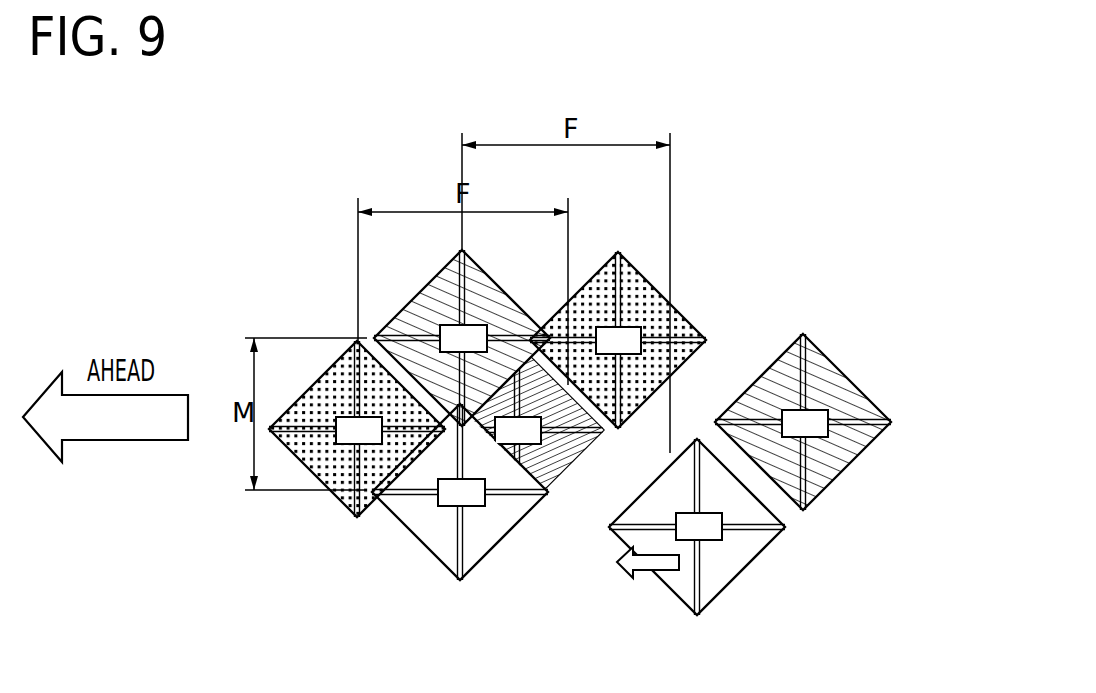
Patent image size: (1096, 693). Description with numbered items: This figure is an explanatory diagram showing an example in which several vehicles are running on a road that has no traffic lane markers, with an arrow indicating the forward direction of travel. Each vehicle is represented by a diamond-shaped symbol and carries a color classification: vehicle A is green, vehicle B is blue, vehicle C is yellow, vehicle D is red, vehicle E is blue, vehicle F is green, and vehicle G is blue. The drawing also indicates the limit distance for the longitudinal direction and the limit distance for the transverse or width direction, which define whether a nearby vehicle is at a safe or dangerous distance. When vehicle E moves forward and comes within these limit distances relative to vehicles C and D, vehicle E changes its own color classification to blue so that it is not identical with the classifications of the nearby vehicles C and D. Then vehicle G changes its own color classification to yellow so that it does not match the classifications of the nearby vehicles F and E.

The vehicle A is at (348, 427).
The vehicle B is at (470, 333).
The vehicle C is at (452, 502).
The vehicle D is at (560, 478).
The vehicle E is at (705, 532).
The vehicle F is at (630, 333).
The vehicle G is at (812, 418).